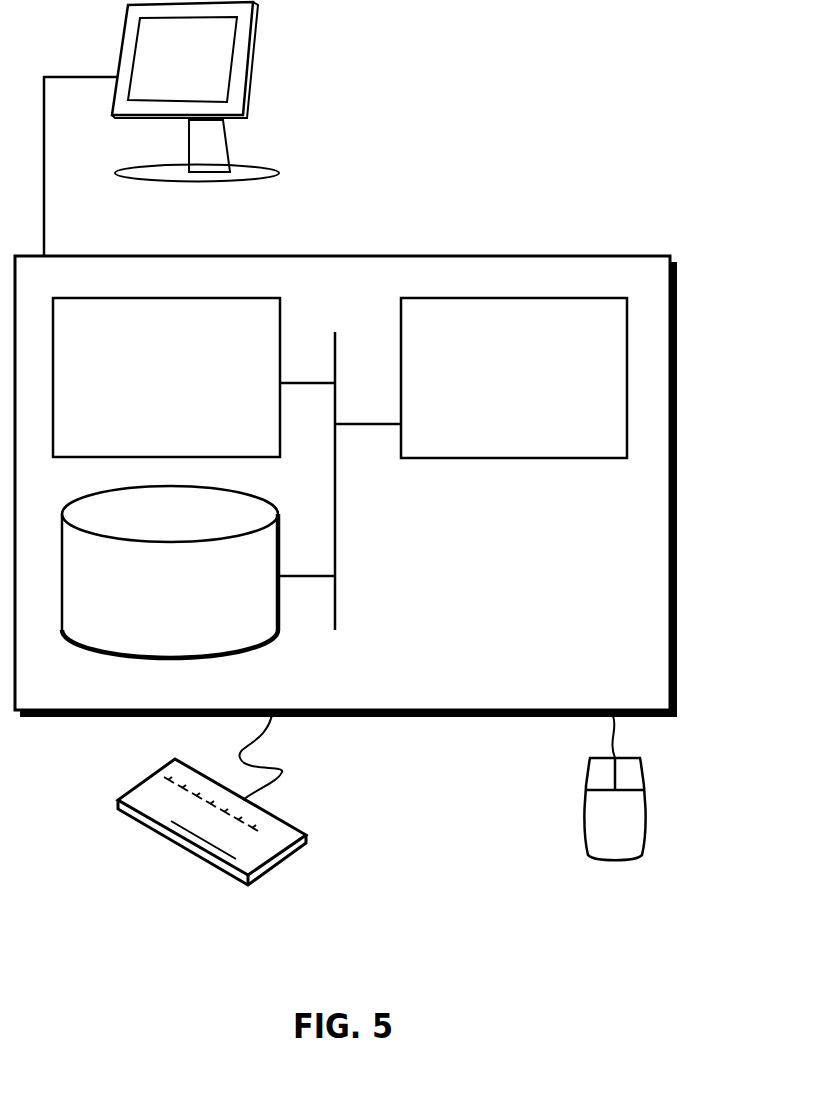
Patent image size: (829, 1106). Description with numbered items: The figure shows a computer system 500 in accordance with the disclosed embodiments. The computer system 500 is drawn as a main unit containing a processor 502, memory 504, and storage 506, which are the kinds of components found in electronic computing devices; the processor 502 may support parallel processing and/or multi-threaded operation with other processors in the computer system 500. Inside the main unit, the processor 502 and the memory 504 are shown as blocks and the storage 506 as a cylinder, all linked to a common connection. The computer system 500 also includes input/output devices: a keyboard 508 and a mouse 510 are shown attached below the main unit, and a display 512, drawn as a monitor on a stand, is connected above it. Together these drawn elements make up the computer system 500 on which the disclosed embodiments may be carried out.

The computer system 500 is at (390, 235).
The processor 502 is at (481, 378).
The memory 504 is at (194, 377).
The storage 506 is at (198, 572).
The keyboard 508 is at (137, 820).
The mouse 510 is at (614, 788).
The display 512 is at (161, 129).